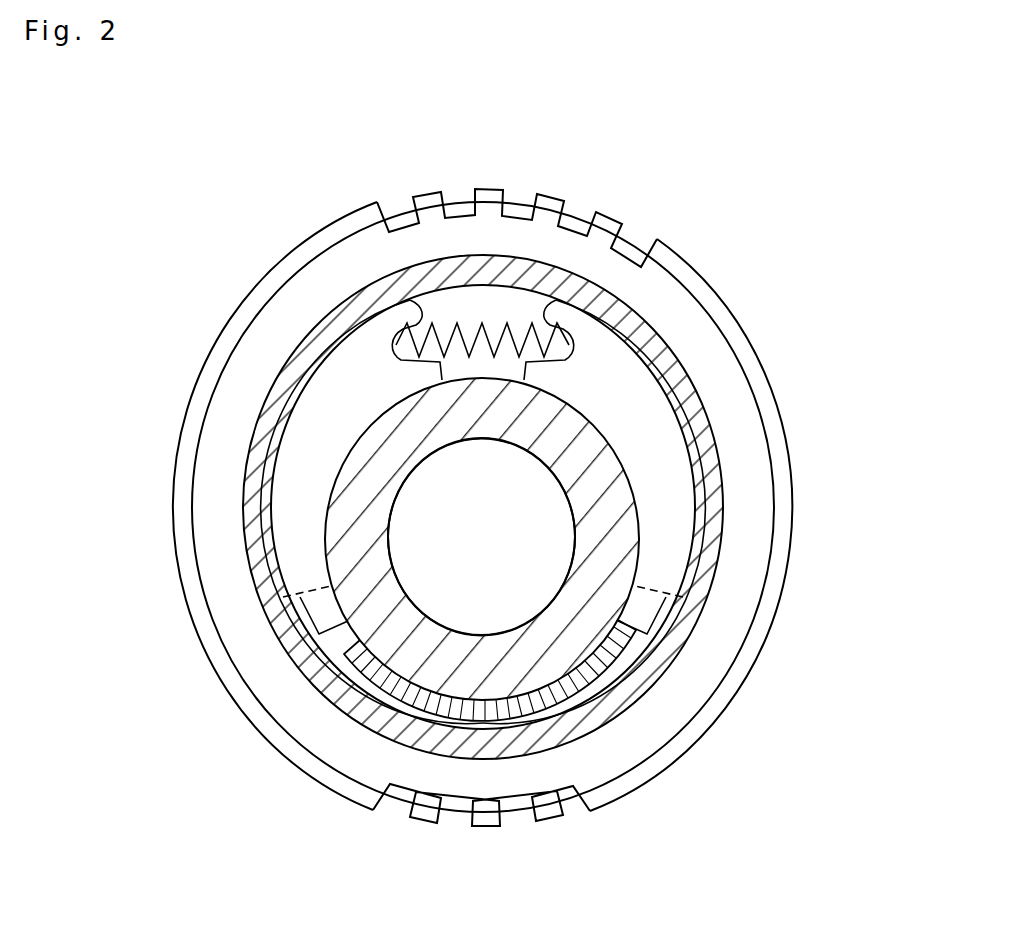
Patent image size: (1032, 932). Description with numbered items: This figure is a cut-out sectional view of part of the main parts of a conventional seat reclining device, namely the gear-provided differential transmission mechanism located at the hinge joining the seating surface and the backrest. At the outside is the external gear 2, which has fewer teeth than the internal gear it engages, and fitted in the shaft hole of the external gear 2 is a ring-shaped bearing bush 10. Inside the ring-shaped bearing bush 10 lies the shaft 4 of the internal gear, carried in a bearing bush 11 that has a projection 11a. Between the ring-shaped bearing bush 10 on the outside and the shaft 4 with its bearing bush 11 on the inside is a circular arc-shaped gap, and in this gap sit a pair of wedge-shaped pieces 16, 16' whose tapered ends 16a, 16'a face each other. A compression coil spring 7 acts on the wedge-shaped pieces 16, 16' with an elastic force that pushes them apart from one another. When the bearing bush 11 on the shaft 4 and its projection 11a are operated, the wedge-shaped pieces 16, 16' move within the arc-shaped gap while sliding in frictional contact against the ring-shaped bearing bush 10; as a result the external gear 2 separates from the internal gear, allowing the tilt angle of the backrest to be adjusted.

The external gear 2 is at (708, 388).
The shaft 4 is at (538, 552).
The compression coil spring 7 is at (452, 316).
The ring-shaped bearing bush 10 is at (712, 515).
The bearing bush 11 is at (605, 492).
The projection 11a is at (328, 700).
The wedge-shaped piece 16 is at (289, 503).
The tapered end 16a is at (327, 612).
The wedge-shaped piece 16' is at (660, 497).
The tapered end 16'a is at (749, 652).